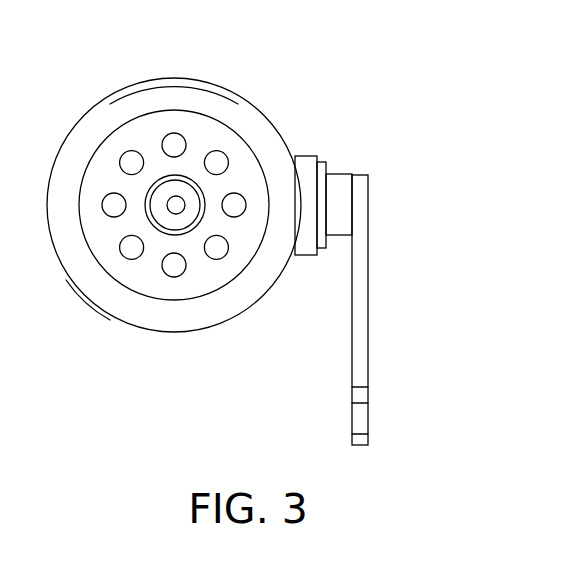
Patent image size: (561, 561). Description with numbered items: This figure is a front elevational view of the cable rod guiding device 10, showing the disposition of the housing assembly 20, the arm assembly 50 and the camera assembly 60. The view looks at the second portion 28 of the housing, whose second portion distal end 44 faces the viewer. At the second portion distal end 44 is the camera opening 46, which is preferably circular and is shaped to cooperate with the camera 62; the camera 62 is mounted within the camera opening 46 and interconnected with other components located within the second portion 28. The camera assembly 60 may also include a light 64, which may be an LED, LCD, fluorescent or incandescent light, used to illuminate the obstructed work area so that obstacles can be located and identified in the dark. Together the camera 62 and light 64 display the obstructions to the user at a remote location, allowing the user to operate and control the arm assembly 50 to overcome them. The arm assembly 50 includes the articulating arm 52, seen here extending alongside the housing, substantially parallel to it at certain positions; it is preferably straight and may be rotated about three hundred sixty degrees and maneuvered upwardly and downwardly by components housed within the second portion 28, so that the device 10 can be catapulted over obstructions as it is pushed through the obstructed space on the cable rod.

The cable rod guiding device 10 is at (296, 57).
The housing assembly 20 is at (289, 136).
The second portion 28 is at (177, 78).
The second portion distal end 44 is at (92, 272).
The camera opening 46 is at (228, 127).
The arm assembly 50 is at (373, 297).
The articulating arm 52 is at (357, 235).
The camera assembly 60 is at (172, 306).
The camera 62 is at (176, 210).
The light 64 is at (176, 141).